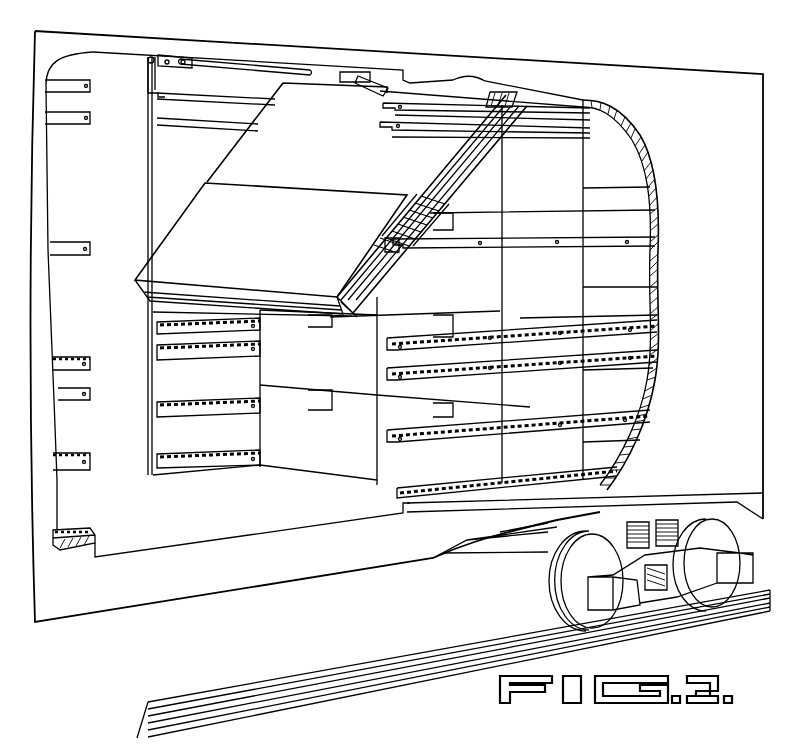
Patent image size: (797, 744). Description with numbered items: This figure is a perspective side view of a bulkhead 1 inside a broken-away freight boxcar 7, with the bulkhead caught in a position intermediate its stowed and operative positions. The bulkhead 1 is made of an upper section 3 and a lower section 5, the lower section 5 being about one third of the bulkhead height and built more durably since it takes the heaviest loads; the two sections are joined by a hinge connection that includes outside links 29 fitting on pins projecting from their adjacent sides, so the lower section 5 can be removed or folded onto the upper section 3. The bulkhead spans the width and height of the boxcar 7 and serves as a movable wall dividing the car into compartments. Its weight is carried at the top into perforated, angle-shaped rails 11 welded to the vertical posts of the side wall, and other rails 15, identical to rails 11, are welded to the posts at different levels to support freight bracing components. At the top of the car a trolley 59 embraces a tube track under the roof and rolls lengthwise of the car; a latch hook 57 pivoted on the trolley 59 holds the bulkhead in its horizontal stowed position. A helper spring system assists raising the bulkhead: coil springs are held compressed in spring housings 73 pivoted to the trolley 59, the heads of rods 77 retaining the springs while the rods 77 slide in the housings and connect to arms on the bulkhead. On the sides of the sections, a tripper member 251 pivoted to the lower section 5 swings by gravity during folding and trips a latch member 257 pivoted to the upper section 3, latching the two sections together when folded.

The bulkhead 1 is at (239, 151).
The upper section 3 is at (322, 138).
The lower section 5 is at (250, 229).
The boxcar 7 is at (690, 66).
The perforated angle-shaped rails 11 is at (533, 103).
The rails 15 is at (165, 95).
The outside links 29 is at (350, 318).
The latch hook 57 is at (157, 85).
The trolley 59 is at (173, 53).
The spring housings 73 is at (240, 63).
The rods 77 is at (320, 72).
The tripper member 251 is at (393, 243).
The latch member 257 is at (402, 207).